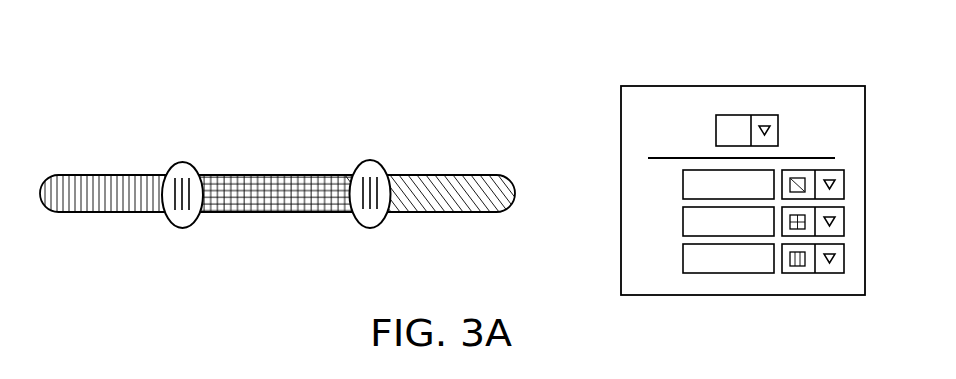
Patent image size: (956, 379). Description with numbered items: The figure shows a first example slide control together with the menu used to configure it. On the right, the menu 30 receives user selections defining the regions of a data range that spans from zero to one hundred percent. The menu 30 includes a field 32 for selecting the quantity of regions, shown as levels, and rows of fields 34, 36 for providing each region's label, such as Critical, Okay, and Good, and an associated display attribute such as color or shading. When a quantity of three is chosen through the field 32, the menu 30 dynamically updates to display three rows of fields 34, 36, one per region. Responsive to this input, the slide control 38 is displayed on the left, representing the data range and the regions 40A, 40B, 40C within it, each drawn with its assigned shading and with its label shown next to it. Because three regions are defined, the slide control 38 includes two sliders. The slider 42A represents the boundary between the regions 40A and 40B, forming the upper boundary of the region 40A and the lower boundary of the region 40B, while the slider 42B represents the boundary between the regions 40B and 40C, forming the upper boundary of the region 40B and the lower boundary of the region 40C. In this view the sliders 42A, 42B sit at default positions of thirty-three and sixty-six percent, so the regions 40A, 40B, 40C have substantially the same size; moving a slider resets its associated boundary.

The menu 30 is at (621, 110).
The field 32 is at (778, 130).
The field 34 is at (720, 273).
The field 36 is at (802, 273).
The slide control 38 is at (286, 133).
The region 40A is at (93, 200).
The region 40B is at (272, 200).
The region 40C is at (452, 200).
The slider 42A is at (183, 162).
The slider 42B is at (368, 161).